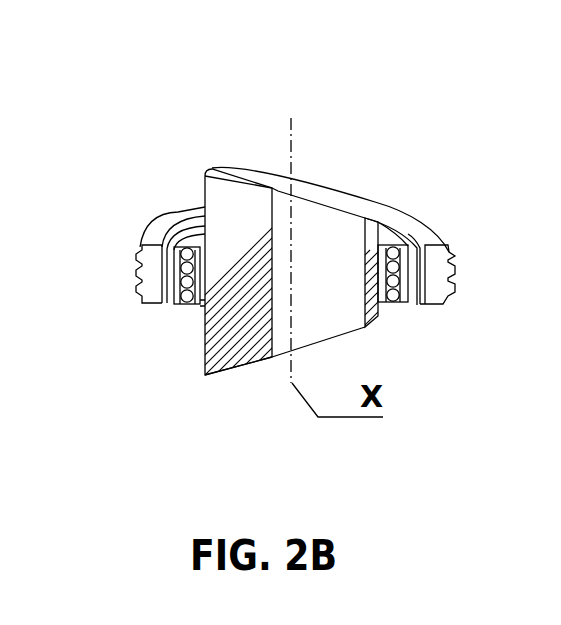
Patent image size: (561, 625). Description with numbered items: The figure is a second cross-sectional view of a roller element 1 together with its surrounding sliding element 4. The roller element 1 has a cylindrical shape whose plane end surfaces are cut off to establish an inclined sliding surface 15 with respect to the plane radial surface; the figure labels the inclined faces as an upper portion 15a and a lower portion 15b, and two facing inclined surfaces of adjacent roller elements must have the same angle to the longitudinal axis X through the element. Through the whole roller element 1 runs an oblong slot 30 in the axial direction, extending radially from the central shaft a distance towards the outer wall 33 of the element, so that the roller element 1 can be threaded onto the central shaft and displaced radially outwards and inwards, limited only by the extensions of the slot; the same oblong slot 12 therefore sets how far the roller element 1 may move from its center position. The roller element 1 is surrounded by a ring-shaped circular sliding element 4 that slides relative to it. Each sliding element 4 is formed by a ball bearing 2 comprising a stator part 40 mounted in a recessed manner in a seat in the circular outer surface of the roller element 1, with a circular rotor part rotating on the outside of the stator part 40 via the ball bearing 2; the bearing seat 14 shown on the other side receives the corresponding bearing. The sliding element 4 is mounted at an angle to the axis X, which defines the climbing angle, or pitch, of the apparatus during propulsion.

The roller element 1 is at (308, 187).
The ball bearing 2 is at (190, 250).
The sliding element 4 is at (443, 252).
The oblong slot 12 is at (402, 258).
The bearing seat 14 is at (157, 229).
The inclined sliding surface 15 is at (241, 175).
The upper end face of rotor body 15a is at (263, 178).
The lower end face of rotor body 15b is at (257, 363).
The oblong slot 30 is at (328, 320).
The outer wall 33 is at (378, 318).
The stator part 40 is at (197, 303).